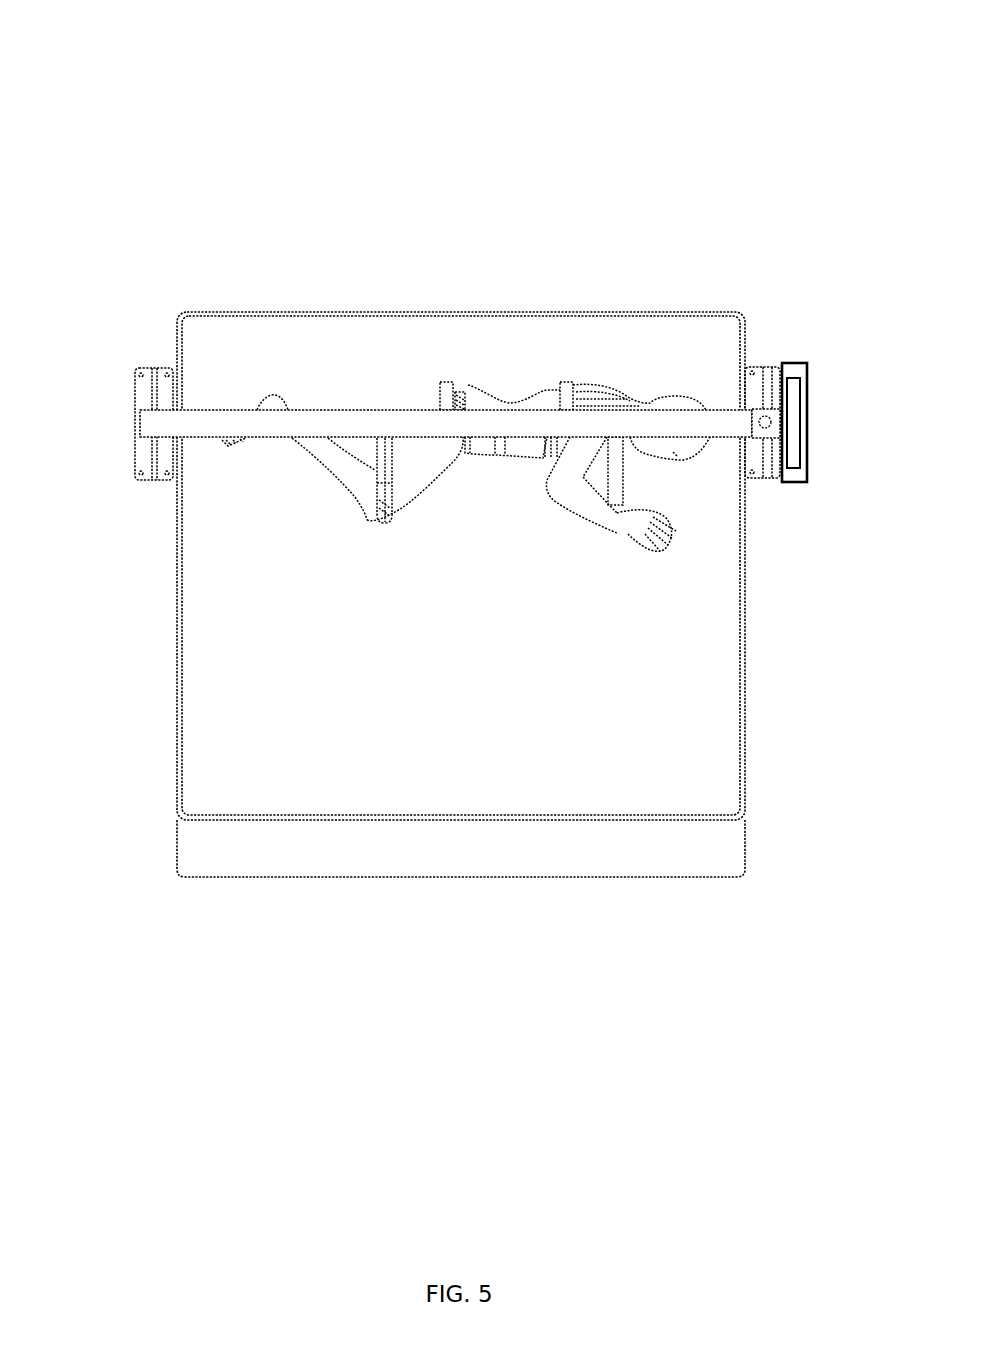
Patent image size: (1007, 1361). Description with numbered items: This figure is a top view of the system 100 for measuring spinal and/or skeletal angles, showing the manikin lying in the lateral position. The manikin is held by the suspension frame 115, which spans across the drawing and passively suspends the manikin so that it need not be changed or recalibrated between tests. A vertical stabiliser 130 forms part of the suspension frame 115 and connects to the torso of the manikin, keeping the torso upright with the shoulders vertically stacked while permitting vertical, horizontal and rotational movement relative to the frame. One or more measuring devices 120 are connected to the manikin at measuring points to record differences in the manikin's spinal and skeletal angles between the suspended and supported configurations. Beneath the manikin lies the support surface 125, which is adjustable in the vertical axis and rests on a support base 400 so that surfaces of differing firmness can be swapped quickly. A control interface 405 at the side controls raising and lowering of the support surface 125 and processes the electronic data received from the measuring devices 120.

The system 100 is at (677, 160).
The suspension frame 115 is at (330, 410).
The measuring devices 120 is at (488, 400).
The support surface 125 is at (405, 820).
The vertical stabiliser 130 is at (567, 400).
The support base 400 is at (297, 877).
The control interface 405 is at (792, 482).